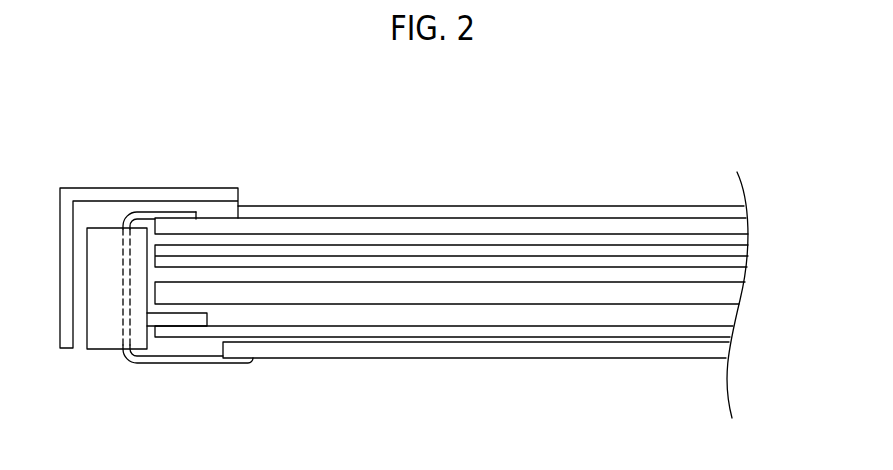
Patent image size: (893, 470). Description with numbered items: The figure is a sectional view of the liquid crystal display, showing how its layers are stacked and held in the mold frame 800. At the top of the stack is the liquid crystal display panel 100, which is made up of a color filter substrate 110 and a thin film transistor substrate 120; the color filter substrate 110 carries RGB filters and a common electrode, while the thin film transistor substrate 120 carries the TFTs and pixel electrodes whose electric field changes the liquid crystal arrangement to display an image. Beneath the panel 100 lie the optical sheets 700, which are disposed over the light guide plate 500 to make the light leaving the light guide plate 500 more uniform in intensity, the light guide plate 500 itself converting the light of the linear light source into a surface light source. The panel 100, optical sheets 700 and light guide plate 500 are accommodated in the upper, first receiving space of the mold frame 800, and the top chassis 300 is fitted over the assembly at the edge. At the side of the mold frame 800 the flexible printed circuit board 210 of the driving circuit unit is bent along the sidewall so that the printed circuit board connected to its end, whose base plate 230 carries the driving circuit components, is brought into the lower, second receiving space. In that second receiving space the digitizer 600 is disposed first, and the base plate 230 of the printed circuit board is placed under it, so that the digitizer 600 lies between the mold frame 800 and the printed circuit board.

The liquid crystal display panel 100 is at (440, 126).
The color filter substrate 110 is at (442, 218).
The thin film transistor substrate 120 is at (530, 227).
The flexible printed circuit board 210 is at (168, 215).
The base plate 230 is at (720, 352).
The top chassis 300 is at (93, 195).
The light guide plate 500 is at (725, 294).
The digitizer 600 is at (720, 333).
The optical sheets 700 is at (737, 249).
The mold frame 800 is at (105, 345).